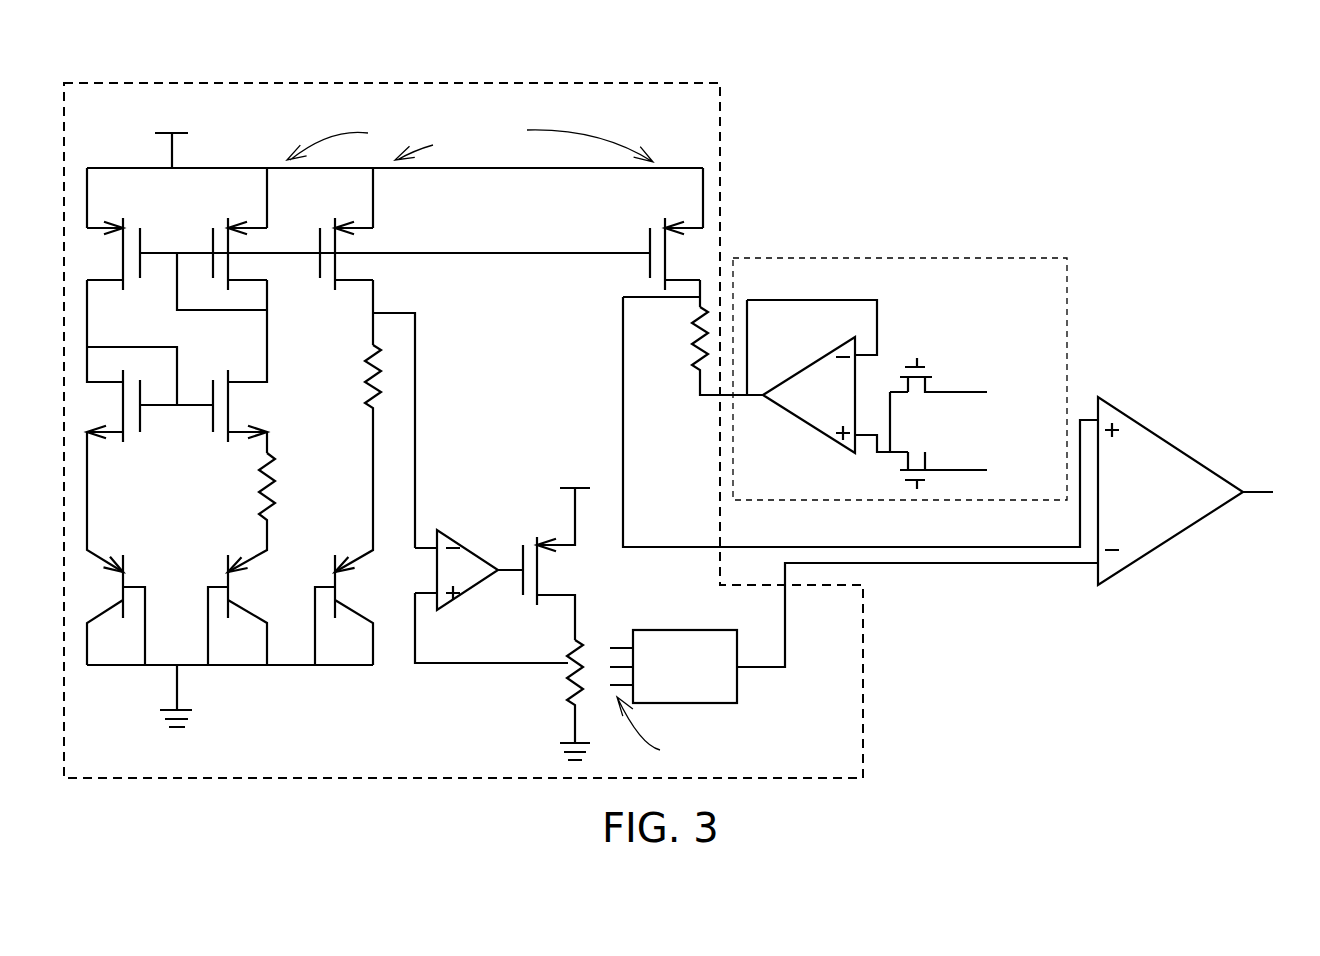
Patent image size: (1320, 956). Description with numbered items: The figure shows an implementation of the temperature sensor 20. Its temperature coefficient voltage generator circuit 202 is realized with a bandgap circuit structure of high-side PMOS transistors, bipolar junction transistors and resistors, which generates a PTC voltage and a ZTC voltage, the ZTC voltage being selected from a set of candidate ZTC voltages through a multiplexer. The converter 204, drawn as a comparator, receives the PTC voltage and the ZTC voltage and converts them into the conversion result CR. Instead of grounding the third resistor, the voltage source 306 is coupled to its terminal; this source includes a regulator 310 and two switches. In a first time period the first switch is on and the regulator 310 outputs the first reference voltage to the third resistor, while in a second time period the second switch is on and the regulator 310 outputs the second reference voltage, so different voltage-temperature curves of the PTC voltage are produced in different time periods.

The temperature sensor 20 is at (1093, 138).
The temperature coefficient voltage generator circuit 202 is at (863, 683).
The converter 204 is at (1172, 538).
The voltage source 306 is at (888, 258).
The regulator 310 is at (811, 403).